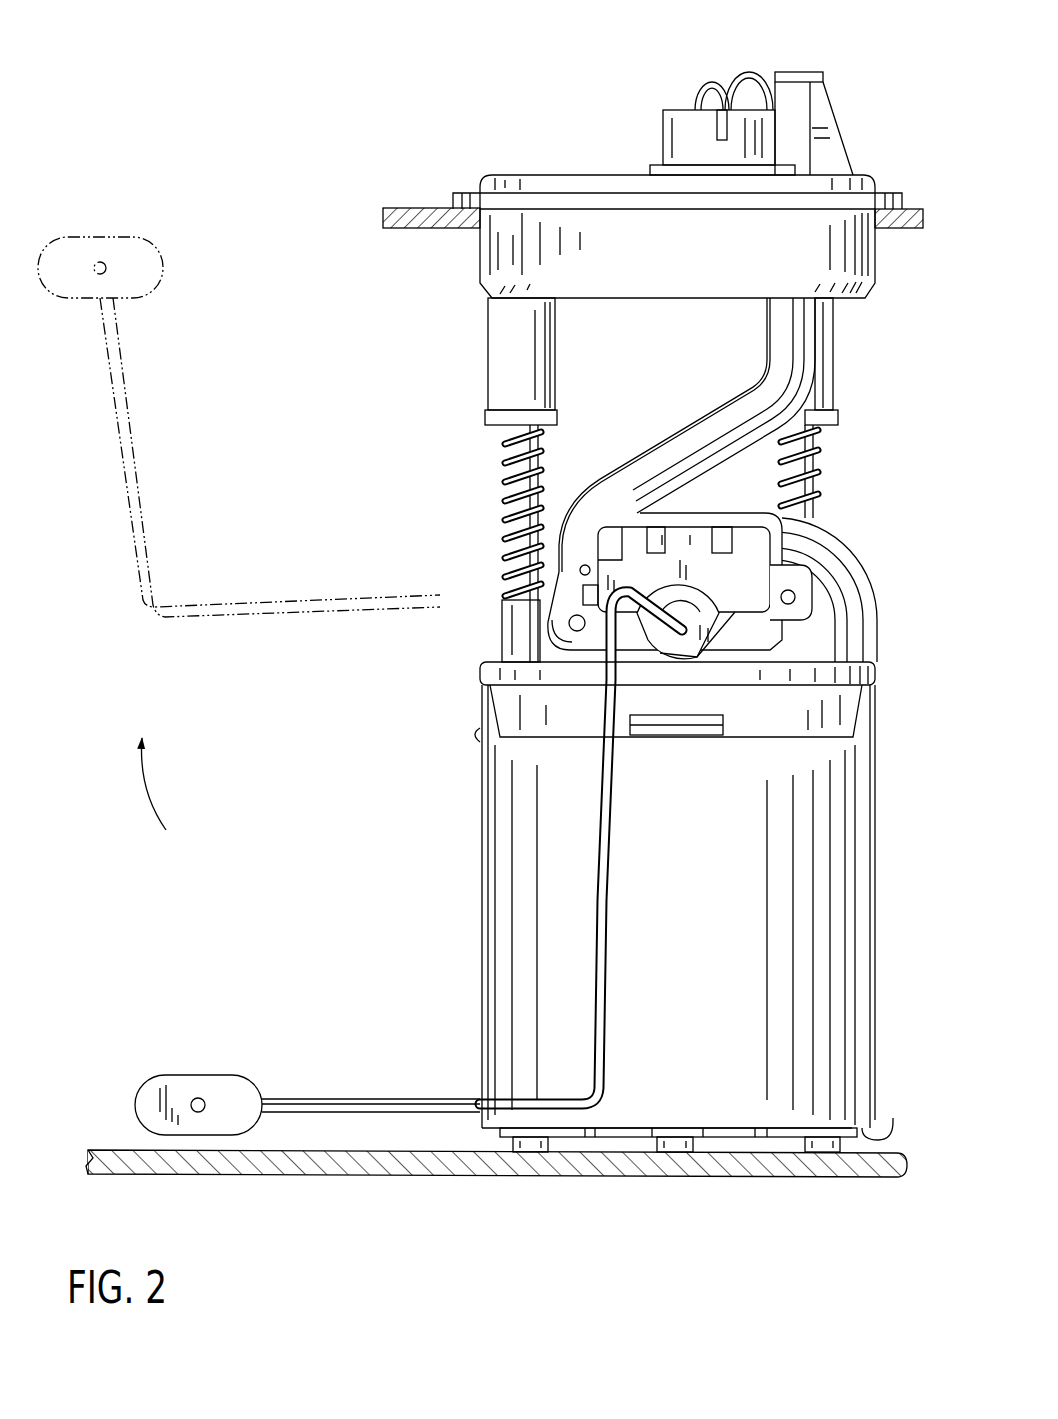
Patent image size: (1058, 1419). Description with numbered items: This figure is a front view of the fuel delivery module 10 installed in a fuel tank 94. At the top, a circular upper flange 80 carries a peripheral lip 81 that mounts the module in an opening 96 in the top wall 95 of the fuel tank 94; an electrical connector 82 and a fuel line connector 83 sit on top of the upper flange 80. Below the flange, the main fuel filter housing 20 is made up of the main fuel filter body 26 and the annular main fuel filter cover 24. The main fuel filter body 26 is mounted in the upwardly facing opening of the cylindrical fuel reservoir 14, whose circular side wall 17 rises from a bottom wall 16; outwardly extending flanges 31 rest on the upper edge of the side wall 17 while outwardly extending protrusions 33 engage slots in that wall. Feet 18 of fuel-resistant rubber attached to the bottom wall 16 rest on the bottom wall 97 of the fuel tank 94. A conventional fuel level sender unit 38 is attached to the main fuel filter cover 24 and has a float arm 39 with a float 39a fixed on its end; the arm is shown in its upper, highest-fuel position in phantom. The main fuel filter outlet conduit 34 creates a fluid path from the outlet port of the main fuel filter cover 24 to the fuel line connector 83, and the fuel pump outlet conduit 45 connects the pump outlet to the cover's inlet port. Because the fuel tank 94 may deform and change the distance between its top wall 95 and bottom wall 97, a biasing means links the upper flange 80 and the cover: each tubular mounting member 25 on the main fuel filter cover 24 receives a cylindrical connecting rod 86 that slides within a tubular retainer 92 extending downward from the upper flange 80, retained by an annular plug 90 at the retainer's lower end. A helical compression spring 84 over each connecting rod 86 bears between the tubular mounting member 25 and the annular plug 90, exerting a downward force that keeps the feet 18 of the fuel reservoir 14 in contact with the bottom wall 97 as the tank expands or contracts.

The fuel delivery module 10 is at (657, 918).
The fuel reservoir 14 is at (655, 906).
The bottom wall 16 is at (893, 1118).
The side wall 17 is at (880, 862).
The feet 18 is at (500, 1140).
The main fuel filter housing 20 is at (658, 906).
The main fuel filter cover 24 is at (876, 668).
The tubular mounting member 25 is at (515, 625).
The main fuel filter body 26 is at (492, 690).
The outwardly extending flange 31 is at (727, 718).
The outwardly extending protrusion 33 is at (470, 738).
The main fuel filter outlet conduit 34 is at (703, 442).
The fuel level sender unit 38 is at (694, 531).
The float arm 39 is at (259, 686).
The float 39a is at (220, 1084).
The fuel pump outlet conduit 45 is at (842, 565).
The upper flange 80 is at (578, 170).
The lip 81 is at (462, 191).
The electrical connector 82 is at (663, 132).
The fuel line connector 83 is at (800, 70).
The helical compression spring 84 is at (500, 475).
The connecting rod 86 is at (515, 516).
The annular plug 90 is at (490, 418).
The tubular retainer 92 is at (505, 340).
The fuel tank 94 is at (500, 702).
The top wall 95 is at (405, 206).
The opening 96 is at (889, 285).
The bottom wall 97 is at (120, 1182).